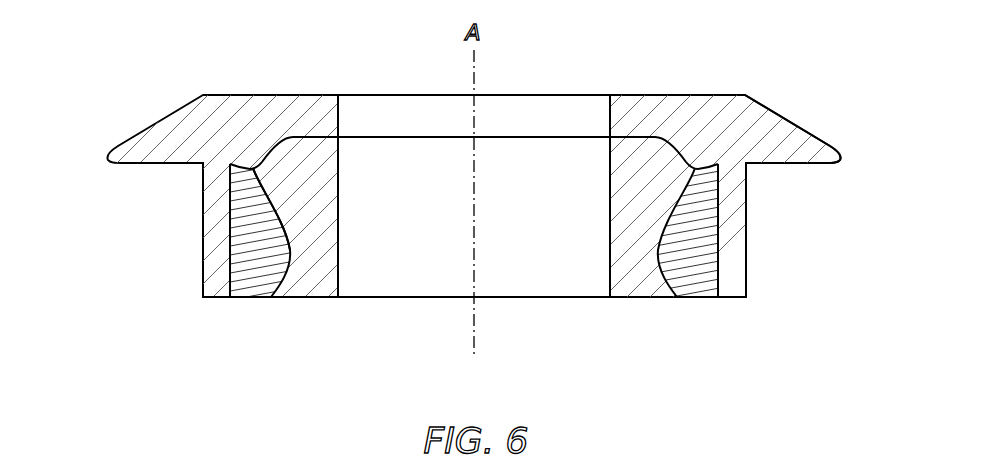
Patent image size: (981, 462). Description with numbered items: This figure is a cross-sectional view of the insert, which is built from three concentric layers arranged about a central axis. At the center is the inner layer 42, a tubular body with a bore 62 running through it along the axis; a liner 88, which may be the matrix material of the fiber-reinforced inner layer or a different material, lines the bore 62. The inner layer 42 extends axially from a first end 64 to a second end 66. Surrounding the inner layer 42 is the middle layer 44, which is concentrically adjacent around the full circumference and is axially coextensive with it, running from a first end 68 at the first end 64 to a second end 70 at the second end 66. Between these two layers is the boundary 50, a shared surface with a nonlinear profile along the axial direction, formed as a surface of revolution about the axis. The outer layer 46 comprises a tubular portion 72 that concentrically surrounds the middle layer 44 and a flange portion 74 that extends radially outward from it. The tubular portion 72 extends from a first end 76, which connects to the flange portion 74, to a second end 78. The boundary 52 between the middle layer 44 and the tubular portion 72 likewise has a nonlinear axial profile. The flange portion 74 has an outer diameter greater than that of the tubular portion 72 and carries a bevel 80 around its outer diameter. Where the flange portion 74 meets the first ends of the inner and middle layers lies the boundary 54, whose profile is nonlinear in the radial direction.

The inner layer 42 is at (637, 297).
The middle layer 44 is at (697, 297).
The outer layer 46 is at (728, 297).
The boundary 50 is at (277, 222).
The boundary 52 is at (230, 273).
The boundary 54 is at (630, 137).
The bore 62 is at (338, 225).
The first end 64 is at (310, 133).
The second end 66 is at (310, 298).
The first end 68 is at (245, 165).
The second end 70 is at (250, 298).
The tubular portion 72 is at (746, 203).
The flange portion 74 is at (835, 142).
The first end 76 is at (203, 166).
The second end 78 is at (217, 298).
The bevel 80 is at (785, 112).
The liner 88 is at (537, 226).